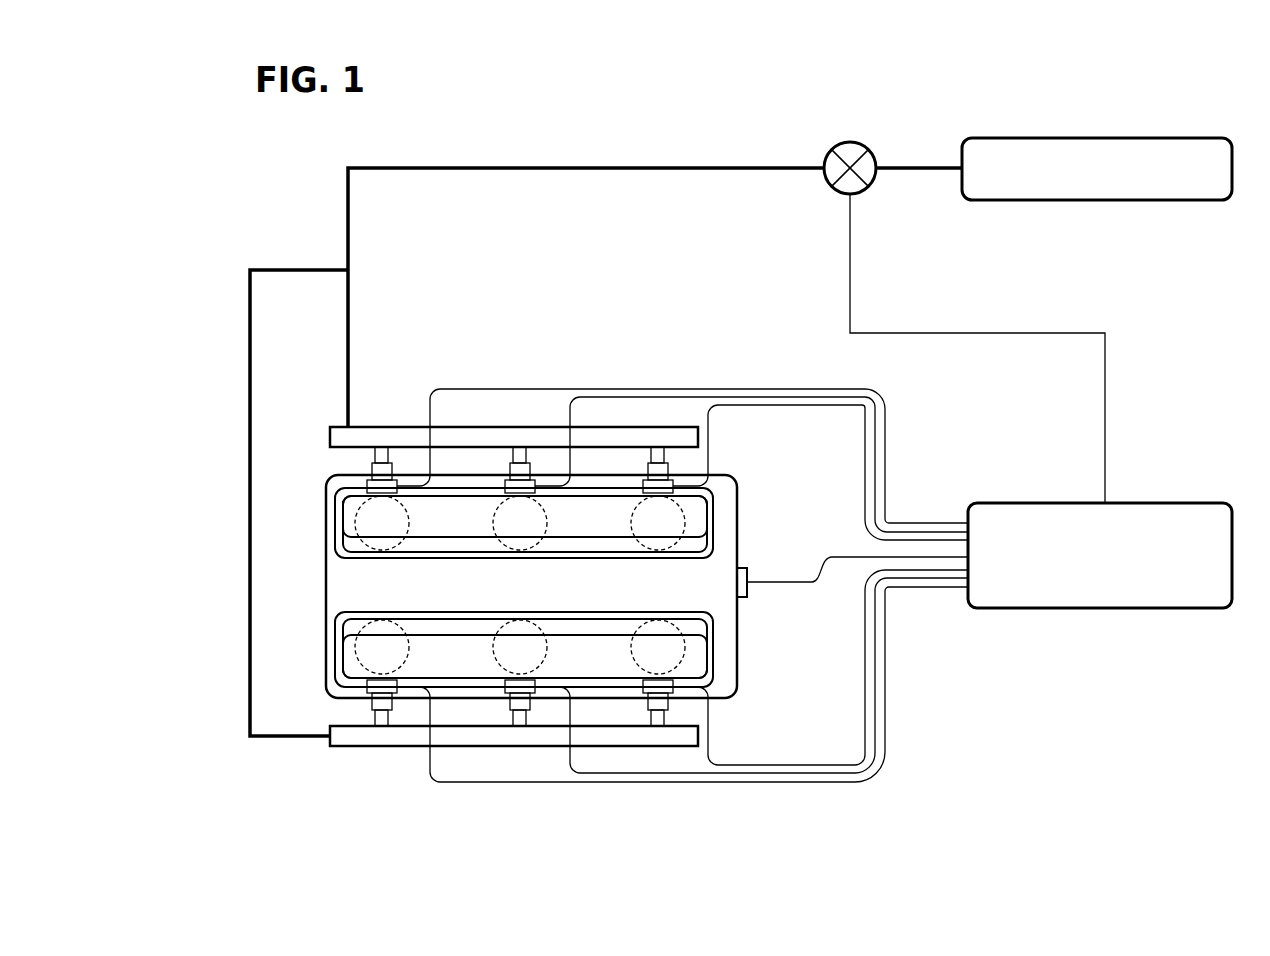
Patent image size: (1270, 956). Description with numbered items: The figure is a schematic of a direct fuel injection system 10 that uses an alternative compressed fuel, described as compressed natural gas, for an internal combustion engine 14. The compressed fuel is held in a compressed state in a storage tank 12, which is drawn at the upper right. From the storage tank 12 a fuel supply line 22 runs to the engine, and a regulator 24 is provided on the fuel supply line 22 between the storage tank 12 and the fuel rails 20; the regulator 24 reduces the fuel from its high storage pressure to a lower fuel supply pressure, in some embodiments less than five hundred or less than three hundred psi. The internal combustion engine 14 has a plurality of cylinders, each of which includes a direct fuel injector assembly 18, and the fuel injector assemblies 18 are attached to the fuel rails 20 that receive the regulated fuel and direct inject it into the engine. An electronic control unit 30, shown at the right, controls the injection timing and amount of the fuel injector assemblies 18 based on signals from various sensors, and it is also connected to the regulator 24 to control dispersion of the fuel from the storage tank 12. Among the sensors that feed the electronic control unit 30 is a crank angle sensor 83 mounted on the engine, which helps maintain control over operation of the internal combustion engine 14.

The direct fuel injection system 10 is at (480, 101).
The storage tank 12 is at (1183, 138).
The internal combustion engine 14 is at (289, 587).
The direct fuel injector assembly 18 is at (398, 468).
The fuel rail 20 is at (375, 425).
The fuel supply line 22 is at (552, 171).
The regulator 24 is at (852, 141).
The electronic control unit 30 is at (1183, 503).
The crank angle sensor 83 is at (742, 567).